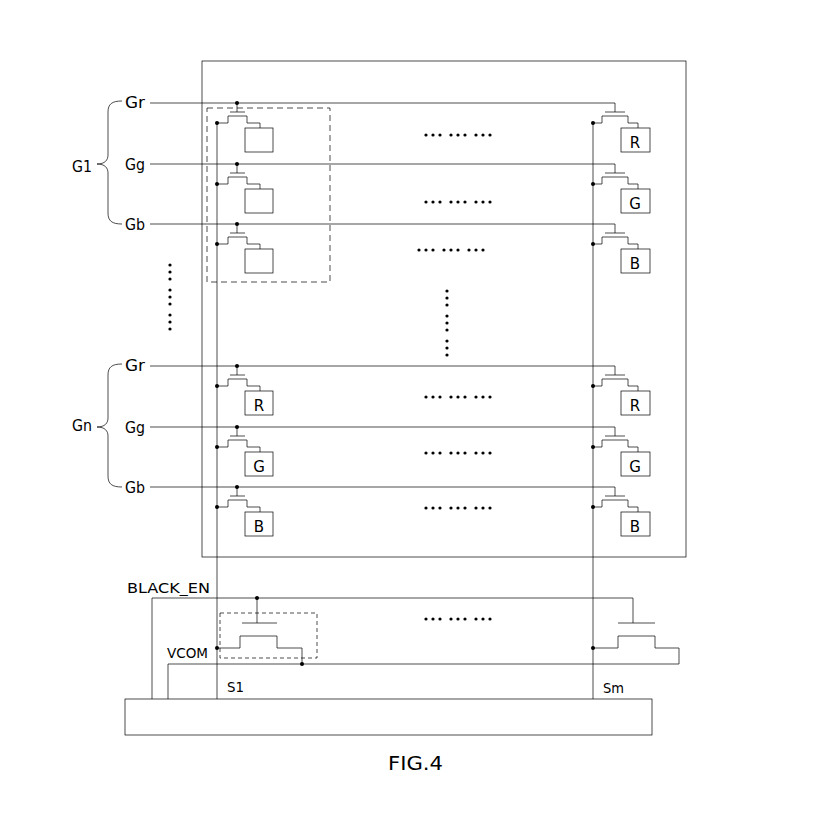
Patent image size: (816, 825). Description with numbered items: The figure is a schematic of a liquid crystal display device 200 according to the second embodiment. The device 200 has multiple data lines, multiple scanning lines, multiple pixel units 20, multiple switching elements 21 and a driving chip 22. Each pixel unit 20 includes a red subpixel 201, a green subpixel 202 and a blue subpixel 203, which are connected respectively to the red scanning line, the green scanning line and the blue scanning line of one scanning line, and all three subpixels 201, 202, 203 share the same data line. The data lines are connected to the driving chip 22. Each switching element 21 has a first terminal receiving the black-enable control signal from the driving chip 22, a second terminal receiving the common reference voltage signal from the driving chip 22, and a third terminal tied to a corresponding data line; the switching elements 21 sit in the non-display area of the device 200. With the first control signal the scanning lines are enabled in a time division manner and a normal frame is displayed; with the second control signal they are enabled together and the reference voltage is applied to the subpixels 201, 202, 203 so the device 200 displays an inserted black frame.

The liquid crystal display device 200 is at (405, 29).
The pixel unit 20 is at (297, 191).
The red subpixel 201 is at (273, 142).
The green subpixel 202 is at (273, 202).
The blue subpixel 203 is at (273, 259).
The switching element 21 is at (317, 638).
The driving chip 22 is at (652, 720).